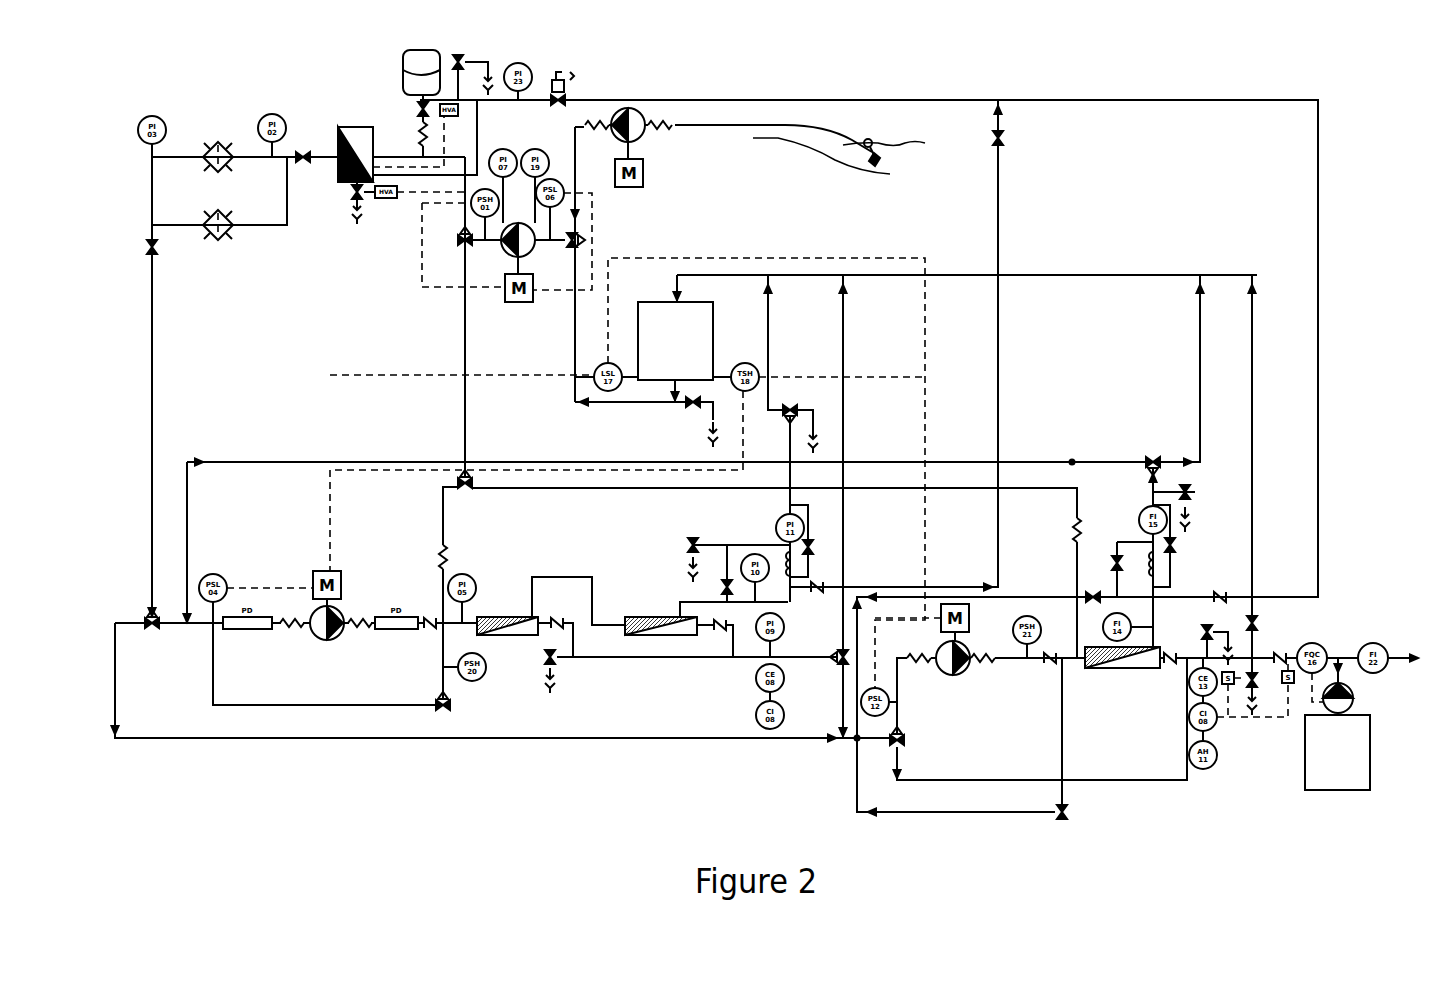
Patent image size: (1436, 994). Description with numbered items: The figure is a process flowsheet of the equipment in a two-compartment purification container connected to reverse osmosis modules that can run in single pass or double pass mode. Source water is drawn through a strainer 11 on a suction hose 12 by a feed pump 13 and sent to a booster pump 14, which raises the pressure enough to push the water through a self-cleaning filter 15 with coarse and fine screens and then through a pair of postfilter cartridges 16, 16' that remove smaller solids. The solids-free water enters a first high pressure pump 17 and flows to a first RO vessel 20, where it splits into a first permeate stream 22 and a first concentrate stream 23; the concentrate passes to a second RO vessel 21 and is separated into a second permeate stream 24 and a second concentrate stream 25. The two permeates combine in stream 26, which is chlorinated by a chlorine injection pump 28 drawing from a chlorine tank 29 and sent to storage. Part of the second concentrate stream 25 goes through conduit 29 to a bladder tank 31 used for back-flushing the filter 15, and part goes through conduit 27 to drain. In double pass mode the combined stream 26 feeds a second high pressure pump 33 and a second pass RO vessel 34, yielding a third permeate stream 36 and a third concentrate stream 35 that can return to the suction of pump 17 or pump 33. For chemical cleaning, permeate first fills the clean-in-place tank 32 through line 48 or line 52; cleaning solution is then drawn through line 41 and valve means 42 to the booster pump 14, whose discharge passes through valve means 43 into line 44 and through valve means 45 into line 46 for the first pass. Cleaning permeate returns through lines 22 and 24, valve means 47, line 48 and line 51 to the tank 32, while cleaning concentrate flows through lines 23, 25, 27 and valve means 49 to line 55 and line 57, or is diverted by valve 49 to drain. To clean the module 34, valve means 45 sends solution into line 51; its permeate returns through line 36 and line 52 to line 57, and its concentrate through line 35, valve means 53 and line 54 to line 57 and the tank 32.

The strainer 11 is at (882, 152).
The suction hose 12 is at (767, 122).
The feed pump 13 is at (642, 102).
The booster pump 14 is at (507, 253).
The self-cleaning filter 15 is at (338, 183).
The postfilter cartridge 16 is at (201, 257).
The postfilter cartridge 16' is at (201, 124).
The first high pressure pump 17 is at (337, 640).
The RO vessel 20 is at (505, 615).
The second RO vessel 21 is at (645, 615).
The first permeate stream 22 is at (603, 660).
The first concentrate stream 23 is at (550, 577).
The second permeate stream 24 is at (733, 630).
The second concentrate stream 25 is at (688, 600).
The combined permeate stream 26 is at (813, 660).
The conduit to drain 27 is at (788, 470).
The chlorine injection pump 28 is at (1352, 695).
The chlorine tank / conduit 29 is at (1003, 365).
The bladder tank 31 is at (402, 63).
The clean-in-place tank 32 is at (720, 330).
The second high pressure pump 33 is at (952, 677).
The second pass RO vessel 34 is at (1103, 668).
The third concentrate stream 35 is at (1165, 595).
The third permeate stream 36 is at (1273, 662).
The line 41 is at (577, 317).
The valve means 42 is at (580, 238).
The valve means 43 is at (460, 237).
The line 44 is at (467, 350).
The valve means 45 is at (458, 492).
The line 46 is at (443, 583).
The valve means 47 is at (835, 648).
The line 48 is at (845, 547).
The valve means 49 is at (793, 403).
The line 51 is at (580, 492).
The line 52 is at (1258, 470).
The valve means 53 is at (1153, 455).
The line 54 is at (1203, 362).
The line 55 is at (770, 310).
The line 57 is at (797, 275).